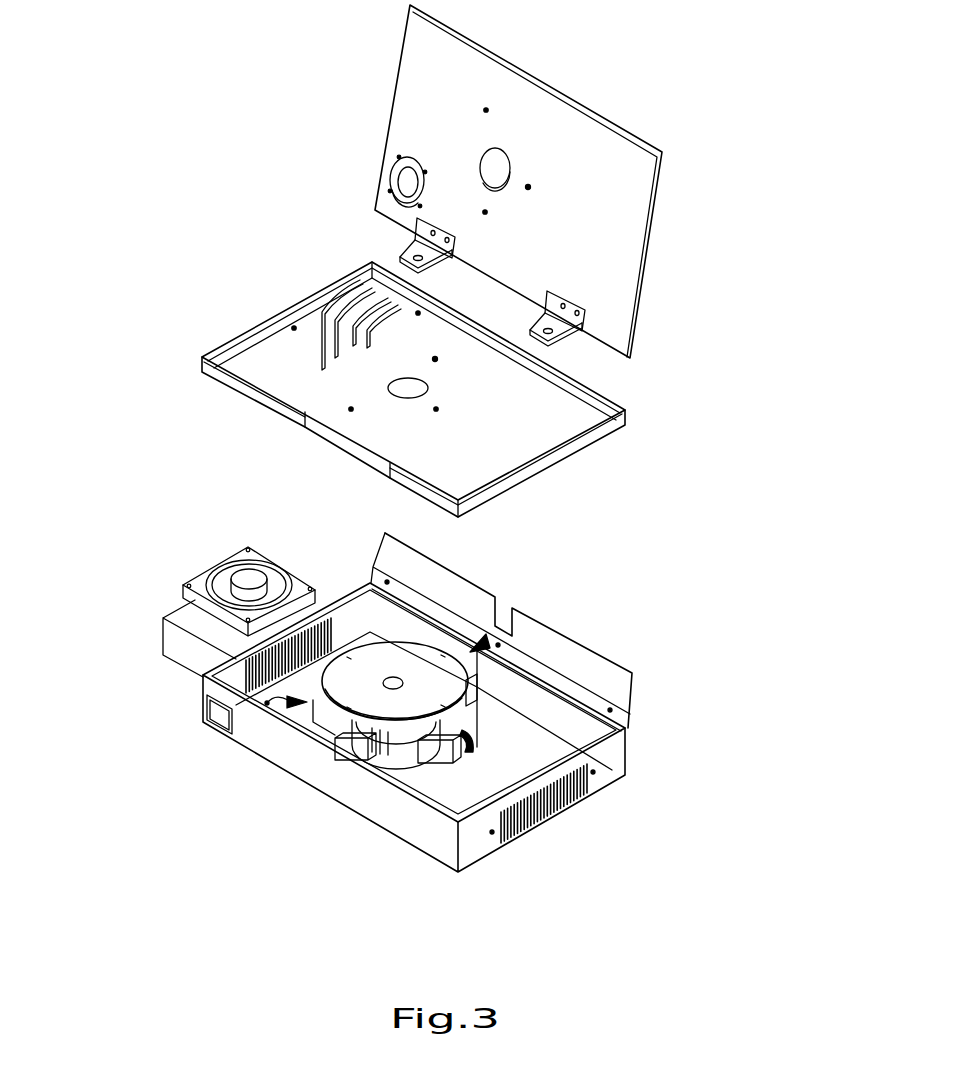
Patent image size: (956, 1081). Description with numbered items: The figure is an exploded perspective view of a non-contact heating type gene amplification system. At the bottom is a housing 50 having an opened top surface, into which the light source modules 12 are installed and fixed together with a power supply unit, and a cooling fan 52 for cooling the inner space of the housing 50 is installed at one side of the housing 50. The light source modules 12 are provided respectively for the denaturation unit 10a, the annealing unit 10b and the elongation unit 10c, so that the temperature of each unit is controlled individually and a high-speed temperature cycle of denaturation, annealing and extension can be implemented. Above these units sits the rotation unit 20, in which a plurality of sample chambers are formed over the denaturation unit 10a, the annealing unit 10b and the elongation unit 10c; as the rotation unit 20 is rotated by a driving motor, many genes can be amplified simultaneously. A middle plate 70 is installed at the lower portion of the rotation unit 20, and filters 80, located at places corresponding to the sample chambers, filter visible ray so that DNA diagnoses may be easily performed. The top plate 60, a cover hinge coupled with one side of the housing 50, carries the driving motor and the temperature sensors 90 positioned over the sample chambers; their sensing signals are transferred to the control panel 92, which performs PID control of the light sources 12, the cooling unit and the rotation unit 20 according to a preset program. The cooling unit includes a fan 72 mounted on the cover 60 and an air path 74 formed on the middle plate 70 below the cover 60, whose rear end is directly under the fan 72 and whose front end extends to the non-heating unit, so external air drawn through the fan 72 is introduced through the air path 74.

The housing 50 is at (620, 752).
The cooling fan 52 is at (172, 638).
The top plate 60 is at (632, 224).
The middle plate 70 is at (527, 427).
The fan 72 is at (393, 176).
The air path 74 is at (318, 322).
The filters 80 is at (437, 358).
The temperature sensors 90 is at (528, 187).
The control panel 92 is at (215, 707).
The rotation unit 20 is at (363, 710).
The light source modules 12 is at (312, 717).
The denaturation unit 10a is at (480, 640).
The annealing unit 10b is at (267, 703).
The elongation unit 10c is at (468, 750).